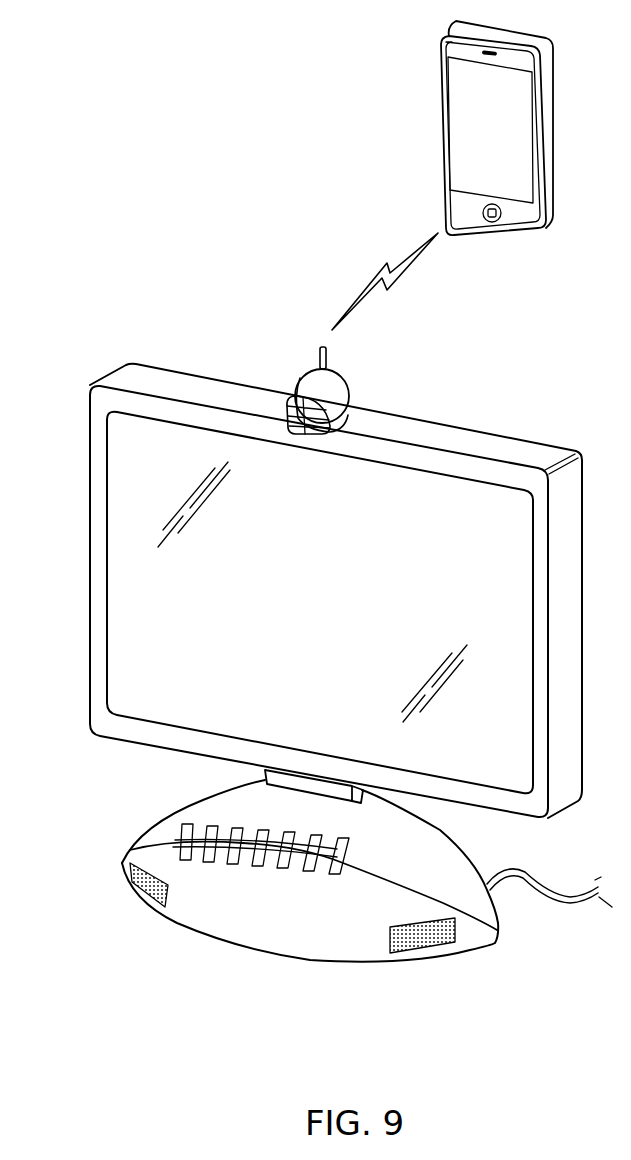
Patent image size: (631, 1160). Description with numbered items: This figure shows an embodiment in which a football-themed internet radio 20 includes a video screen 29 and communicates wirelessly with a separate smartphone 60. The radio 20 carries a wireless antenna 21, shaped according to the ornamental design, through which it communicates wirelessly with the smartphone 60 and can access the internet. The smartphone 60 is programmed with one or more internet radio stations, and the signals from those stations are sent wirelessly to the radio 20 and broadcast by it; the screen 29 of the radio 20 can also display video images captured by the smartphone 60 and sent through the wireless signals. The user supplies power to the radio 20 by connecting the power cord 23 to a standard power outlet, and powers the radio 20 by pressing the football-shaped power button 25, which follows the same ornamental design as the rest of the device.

The radio 20 is at (475, 443).
The wireless antenna 21 is at (318, 360).
The power cord 23 is at (567, 905).
The power button 25 is at (200, 800).
The display screen 29 is at (122, 506).
The smartphone 60 is at (470, 143).